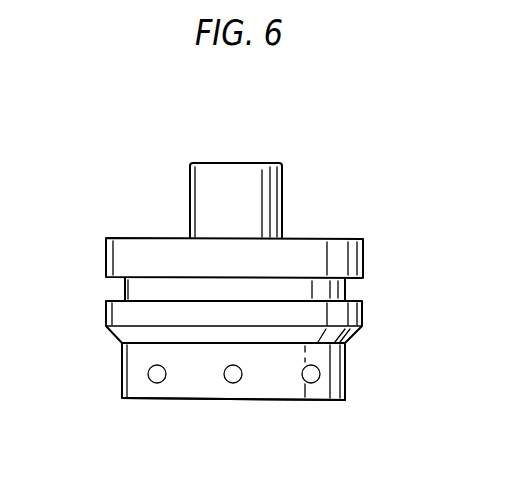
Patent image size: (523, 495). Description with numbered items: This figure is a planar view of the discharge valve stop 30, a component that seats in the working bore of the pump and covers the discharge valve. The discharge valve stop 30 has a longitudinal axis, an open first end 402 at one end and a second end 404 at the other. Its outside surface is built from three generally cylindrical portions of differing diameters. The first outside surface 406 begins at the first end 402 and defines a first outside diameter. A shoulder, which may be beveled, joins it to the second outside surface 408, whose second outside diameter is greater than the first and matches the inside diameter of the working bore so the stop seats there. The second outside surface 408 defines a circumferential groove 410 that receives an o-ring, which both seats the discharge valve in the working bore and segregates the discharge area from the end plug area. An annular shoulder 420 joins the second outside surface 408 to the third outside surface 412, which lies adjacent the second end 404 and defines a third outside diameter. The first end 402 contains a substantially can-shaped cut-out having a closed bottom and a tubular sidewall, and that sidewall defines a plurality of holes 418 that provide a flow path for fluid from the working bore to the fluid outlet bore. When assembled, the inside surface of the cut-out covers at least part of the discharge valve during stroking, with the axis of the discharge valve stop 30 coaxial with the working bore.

The discharge valve stop 30 is at (400, 235).
The open first end 402 is at (287, 399).
The second end 404 is at (252, 162).
The first outside surface 406 is at (337, 388).
The second outside surface 408 is at (110, 320).
The circumferential groove 410 is at (125, 287).
The third outside surface 412 is at (257, 198).
The holes 418 is at (157, 374).
The annular shoulder 420 is at (142, 235).